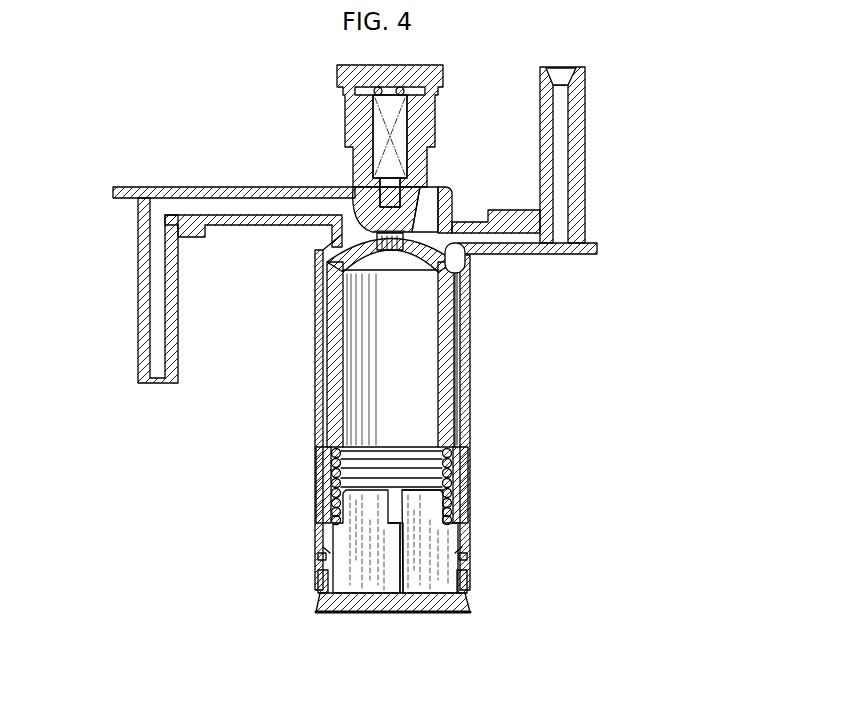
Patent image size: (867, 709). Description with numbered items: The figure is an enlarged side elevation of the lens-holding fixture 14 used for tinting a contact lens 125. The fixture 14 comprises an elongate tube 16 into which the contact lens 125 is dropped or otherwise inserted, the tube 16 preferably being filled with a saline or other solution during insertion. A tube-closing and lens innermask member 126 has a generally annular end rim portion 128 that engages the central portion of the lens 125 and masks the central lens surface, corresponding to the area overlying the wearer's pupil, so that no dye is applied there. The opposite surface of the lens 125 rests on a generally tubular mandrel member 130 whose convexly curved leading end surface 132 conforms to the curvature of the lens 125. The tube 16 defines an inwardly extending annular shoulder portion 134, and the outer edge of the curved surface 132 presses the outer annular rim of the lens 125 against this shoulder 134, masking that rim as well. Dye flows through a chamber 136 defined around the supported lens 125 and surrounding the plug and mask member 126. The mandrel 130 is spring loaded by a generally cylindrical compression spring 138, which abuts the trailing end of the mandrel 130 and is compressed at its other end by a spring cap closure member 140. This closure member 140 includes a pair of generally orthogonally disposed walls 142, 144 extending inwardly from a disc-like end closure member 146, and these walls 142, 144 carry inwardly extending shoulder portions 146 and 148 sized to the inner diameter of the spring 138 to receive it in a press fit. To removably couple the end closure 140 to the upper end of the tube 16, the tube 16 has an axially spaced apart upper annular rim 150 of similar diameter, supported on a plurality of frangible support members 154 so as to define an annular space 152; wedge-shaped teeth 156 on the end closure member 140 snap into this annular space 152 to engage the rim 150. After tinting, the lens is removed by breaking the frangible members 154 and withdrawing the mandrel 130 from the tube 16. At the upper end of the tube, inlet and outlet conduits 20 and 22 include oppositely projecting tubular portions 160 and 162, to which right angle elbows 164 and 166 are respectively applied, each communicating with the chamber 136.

The fixture 14 is at (350, 437).
The elongate tube 16 is at (318, 340).
The inlet conduit 20 is at (584, 261).
The outlet conduit 22 is at (201, 252).
The contact lens 125 is at (322, 233).
The tube-closing and lens innermask member 126 is at (423, 112).
The annular end rim portion 128 is at (355, 230).
The tubular mandrel member 130 is at (446, 325).
The convexly curved leading end surface 132 is at (463, 263).
The annular shoulder portion 134 is at (450, 272).
The chamber 136 is at (440, 190).
The compression spring 138 is at (455, 462).
The spring cap closure member 140 is at (312, 602).
The orthogonally disposed wall 142 is at (360, 556).
The orthogonally disposed wall 144 is at (430, 541).
The disc-like end closure member 146 is at (420, 493).
The shoulder portion 148 is at (392, 493).
The upper annular rim 150 is at (473, 588).
The annular space 152 is at (320, 560).
The frangible support member 154 is at (322, 565).
The wedge-shaped tooth 156 is at (320, 553).
The tubular portion 160 is at (470, 222).
The tubular portion 162 is at (238, 187).
The right angle elbow 164 is at (585, 128).
The right angle elbow 166 is at (138, 278).